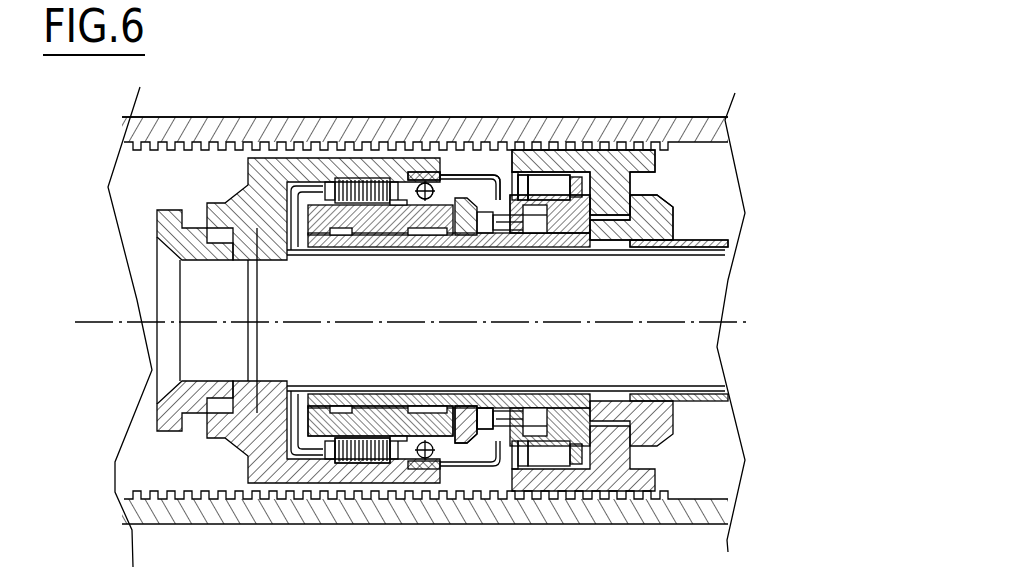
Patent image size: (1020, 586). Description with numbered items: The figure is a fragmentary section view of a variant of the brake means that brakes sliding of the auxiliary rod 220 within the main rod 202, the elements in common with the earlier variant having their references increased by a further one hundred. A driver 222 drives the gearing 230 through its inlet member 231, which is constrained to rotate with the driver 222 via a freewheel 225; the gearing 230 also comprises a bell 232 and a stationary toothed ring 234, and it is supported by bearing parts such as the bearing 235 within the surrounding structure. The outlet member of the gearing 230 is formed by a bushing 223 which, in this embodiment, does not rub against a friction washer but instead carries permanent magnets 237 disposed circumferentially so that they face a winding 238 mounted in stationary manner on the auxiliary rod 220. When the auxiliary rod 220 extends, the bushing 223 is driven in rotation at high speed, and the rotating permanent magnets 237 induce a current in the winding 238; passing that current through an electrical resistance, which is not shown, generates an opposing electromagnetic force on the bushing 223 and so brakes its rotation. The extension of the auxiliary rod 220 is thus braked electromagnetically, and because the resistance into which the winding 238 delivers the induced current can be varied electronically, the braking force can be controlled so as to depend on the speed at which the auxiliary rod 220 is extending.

The outer tube 202 is at (203, 134).
The auxiliary rod 220 is at (710, 237).
The driver 222 is at (610, 172).
The bushing 223 is at (440, 433).
The freewheel 225 is at (583, 223).
The gearing 230 is at (487, 170).
The inlet member 231 is at (547, 222).
The bell 232 is at (482, 465).
The stationary toothed ring 234 is at (423, 184).
The bearing race 235 is at (415, 188).
The permanent magnets 237 is at (338, 432).
The winding 238 is at (367, 453).